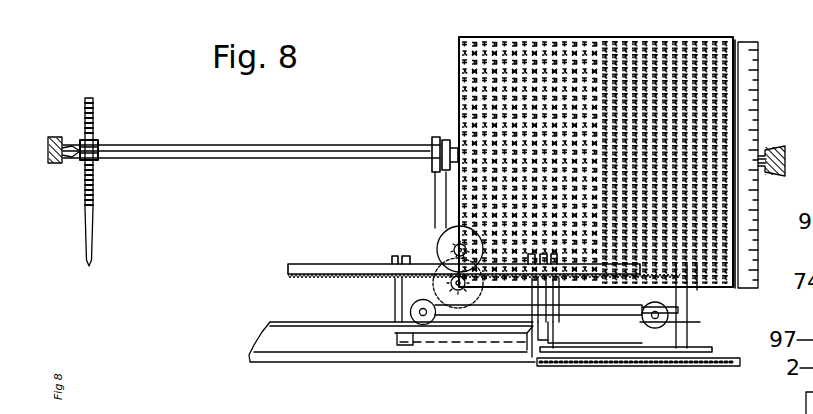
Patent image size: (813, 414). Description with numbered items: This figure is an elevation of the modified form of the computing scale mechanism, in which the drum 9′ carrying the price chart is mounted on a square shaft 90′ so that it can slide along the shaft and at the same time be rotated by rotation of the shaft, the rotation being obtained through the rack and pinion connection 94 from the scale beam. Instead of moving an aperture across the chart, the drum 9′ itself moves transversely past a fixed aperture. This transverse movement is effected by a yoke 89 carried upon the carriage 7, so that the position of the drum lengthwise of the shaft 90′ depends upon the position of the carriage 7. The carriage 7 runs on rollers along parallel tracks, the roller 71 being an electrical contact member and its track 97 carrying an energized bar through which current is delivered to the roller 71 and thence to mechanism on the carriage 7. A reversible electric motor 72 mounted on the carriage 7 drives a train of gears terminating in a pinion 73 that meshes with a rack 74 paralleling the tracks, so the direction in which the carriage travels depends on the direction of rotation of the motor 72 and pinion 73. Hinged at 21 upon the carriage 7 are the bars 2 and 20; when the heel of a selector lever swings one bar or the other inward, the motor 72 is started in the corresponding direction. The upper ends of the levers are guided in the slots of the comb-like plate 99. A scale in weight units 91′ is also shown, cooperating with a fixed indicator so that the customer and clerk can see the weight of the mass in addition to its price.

The drum 9′ is at (567, 55).
The scale in weight units 91′ is at (744, 88).
The square shaft 90′ is at (262, 150).
The rack and pinion connection 94 is at (93, 142).
The yoke 89 is at (437, 198).
The electric motor 72 is at (452, 246).
The pinion 73 is at (468, 283).
The rack 74 is at (325, 264).
The hinge 21 is at (392, 259).
The carriage 7 is at (618, 312).
The roller 71 is at (425, 314).
The bar 2 is at (574, 346).
The bar 20 is at (530, 342).
The track 97 is at (327, 323).
The plate 99 is at (730, 366).